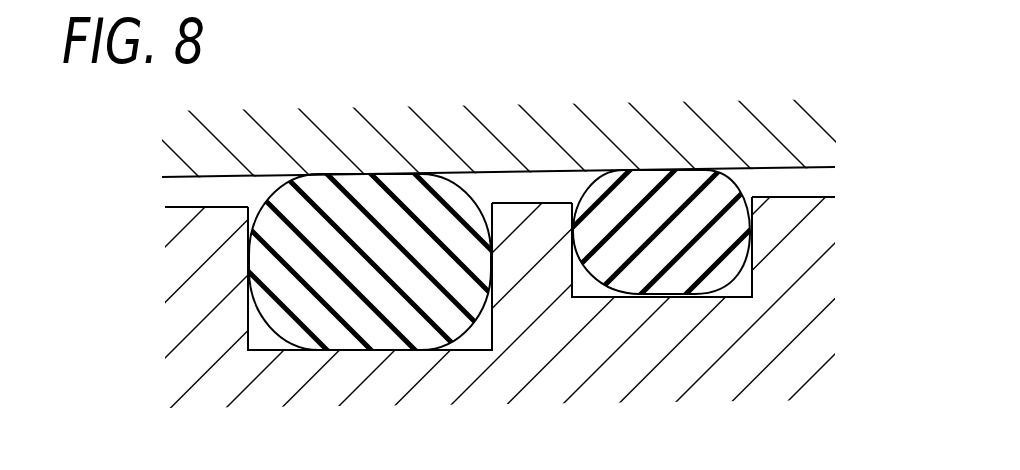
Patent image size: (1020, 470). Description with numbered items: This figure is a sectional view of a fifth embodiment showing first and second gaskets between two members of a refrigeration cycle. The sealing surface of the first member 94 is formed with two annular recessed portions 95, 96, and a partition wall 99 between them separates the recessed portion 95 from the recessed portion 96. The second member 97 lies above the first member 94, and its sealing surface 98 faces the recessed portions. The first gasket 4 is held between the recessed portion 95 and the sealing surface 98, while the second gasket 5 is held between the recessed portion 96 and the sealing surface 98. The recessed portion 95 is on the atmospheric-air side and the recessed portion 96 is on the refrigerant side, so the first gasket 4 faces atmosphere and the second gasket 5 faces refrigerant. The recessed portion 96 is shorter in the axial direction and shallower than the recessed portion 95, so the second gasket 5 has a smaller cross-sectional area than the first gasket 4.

The first gasket 4 is at (348, 215).
The second gasket 5 is at (715, 203).
The first member 94 is at (593, 390).
The recessed portion 95 is at (472, 332).
The recessed portion 96 is at (737, 283).
The second member 97 is at (476, 122).
The sealing surface 98 is at (807, 167).
The partition wall 99 is at (552, 203).